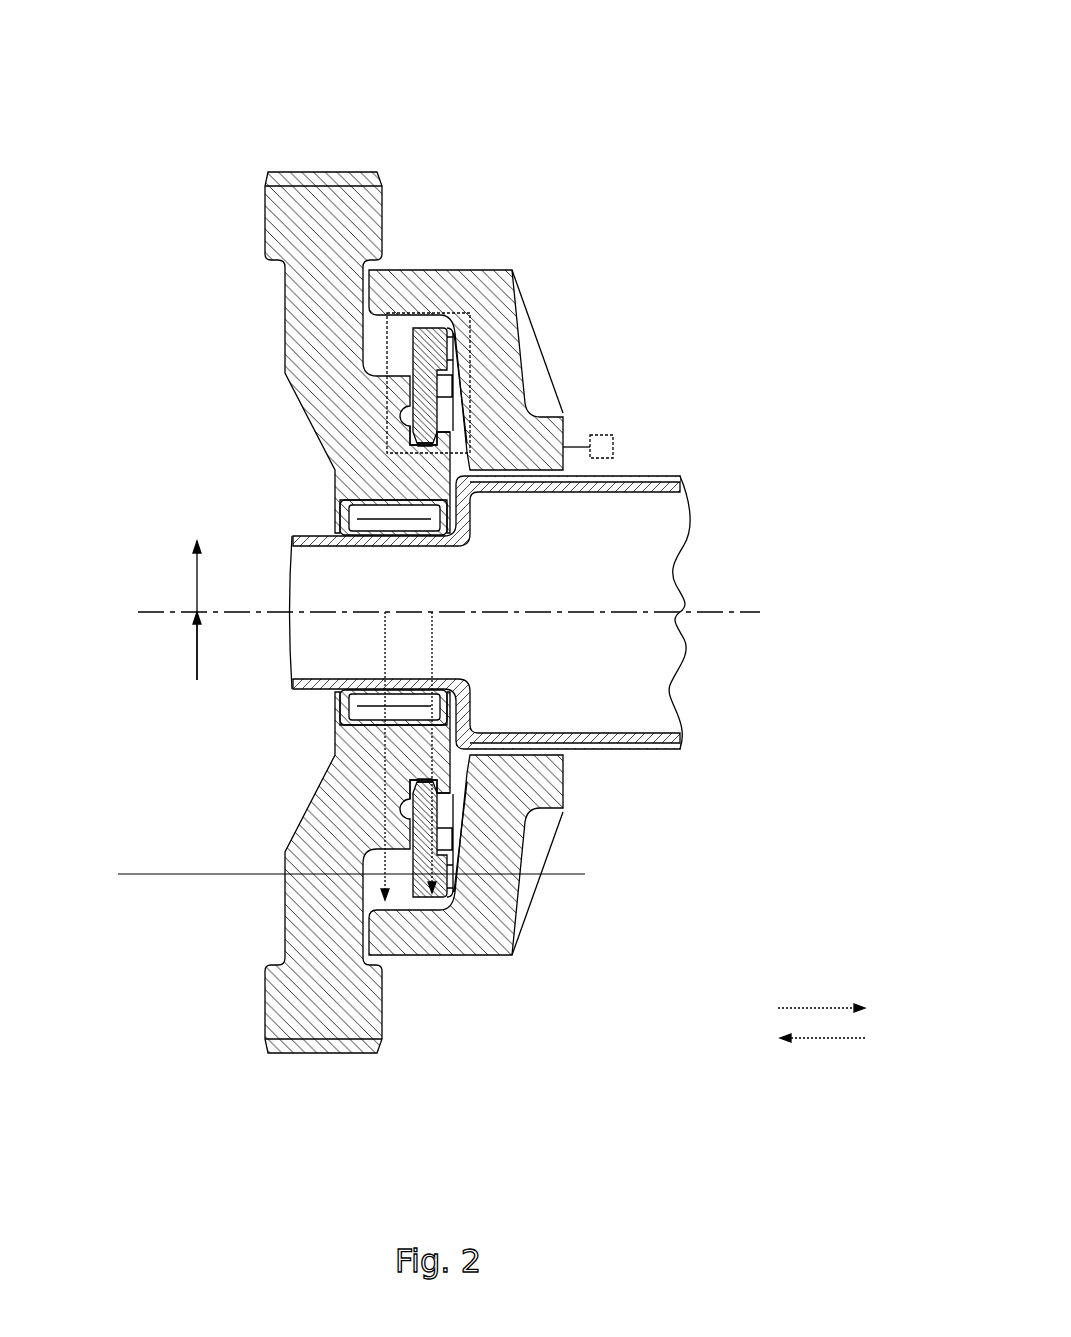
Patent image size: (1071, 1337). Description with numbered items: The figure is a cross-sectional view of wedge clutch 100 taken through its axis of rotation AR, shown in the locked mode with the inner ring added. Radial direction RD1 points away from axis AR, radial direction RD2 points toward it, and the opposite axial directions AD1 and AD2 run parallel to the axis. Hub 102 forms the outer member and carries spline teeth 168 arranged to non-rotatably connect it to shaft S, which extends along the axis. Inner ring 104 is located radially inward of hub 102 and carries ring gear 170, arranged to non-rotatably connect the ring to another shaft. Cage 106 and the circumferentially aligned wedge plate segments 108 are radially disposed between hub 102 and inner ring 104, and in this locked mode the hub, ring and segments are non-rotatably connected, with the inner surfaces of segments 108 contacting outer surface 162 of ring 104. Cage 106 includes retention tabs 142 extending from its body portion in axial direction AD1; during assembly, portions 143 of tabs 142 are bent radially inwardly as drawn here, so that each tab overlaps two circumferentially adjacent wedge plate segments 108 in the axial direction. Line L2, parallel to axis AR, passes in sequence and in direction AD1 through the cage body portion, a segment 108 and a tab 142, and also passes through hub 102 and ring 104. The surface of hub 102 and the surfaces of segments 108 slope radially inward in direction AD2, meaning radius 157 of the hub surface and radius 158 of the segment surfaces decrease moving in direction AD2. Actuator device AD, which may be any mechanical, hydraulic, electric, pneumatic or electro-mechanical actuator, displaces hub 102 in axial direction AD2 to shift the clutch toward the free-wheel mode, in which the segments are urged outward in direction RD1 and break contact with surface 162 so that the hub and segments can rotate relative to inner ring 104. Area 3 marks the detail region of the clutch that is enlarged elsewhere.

The wedge clutch 100 is at (487, 548).
The ring gear 170 is at (333, 170).
The inner ring 104 is at (256, 214).
The wedge plate segments 108 is at (398, 331).
The cage 106 is at (398, 353).
The outer surface 162 is at (395, 450).
The area 3 is at (429, 312).
The hub 102 is at (548, 330).
The actuator device AD is at (613, 447).
The spline teeth 168 is at (531, 494).
The radius 158 is at (490, 665).
The radial direction RD1 is at (196, 582).
The radial direction RD2 is at (196, 635).
The axis of rotation AR is at (243, 616).
The radius 157 is at (387, 757).
The line L2 is at (190, 873).
The portions 143 is at (400, 873).
The retention tabs 142 is at (451, 898).
The shaft S is at (613, 750).
The axial direction AD2 is at (812, 1007).
The axial direction AD1 is at (820, 1038).